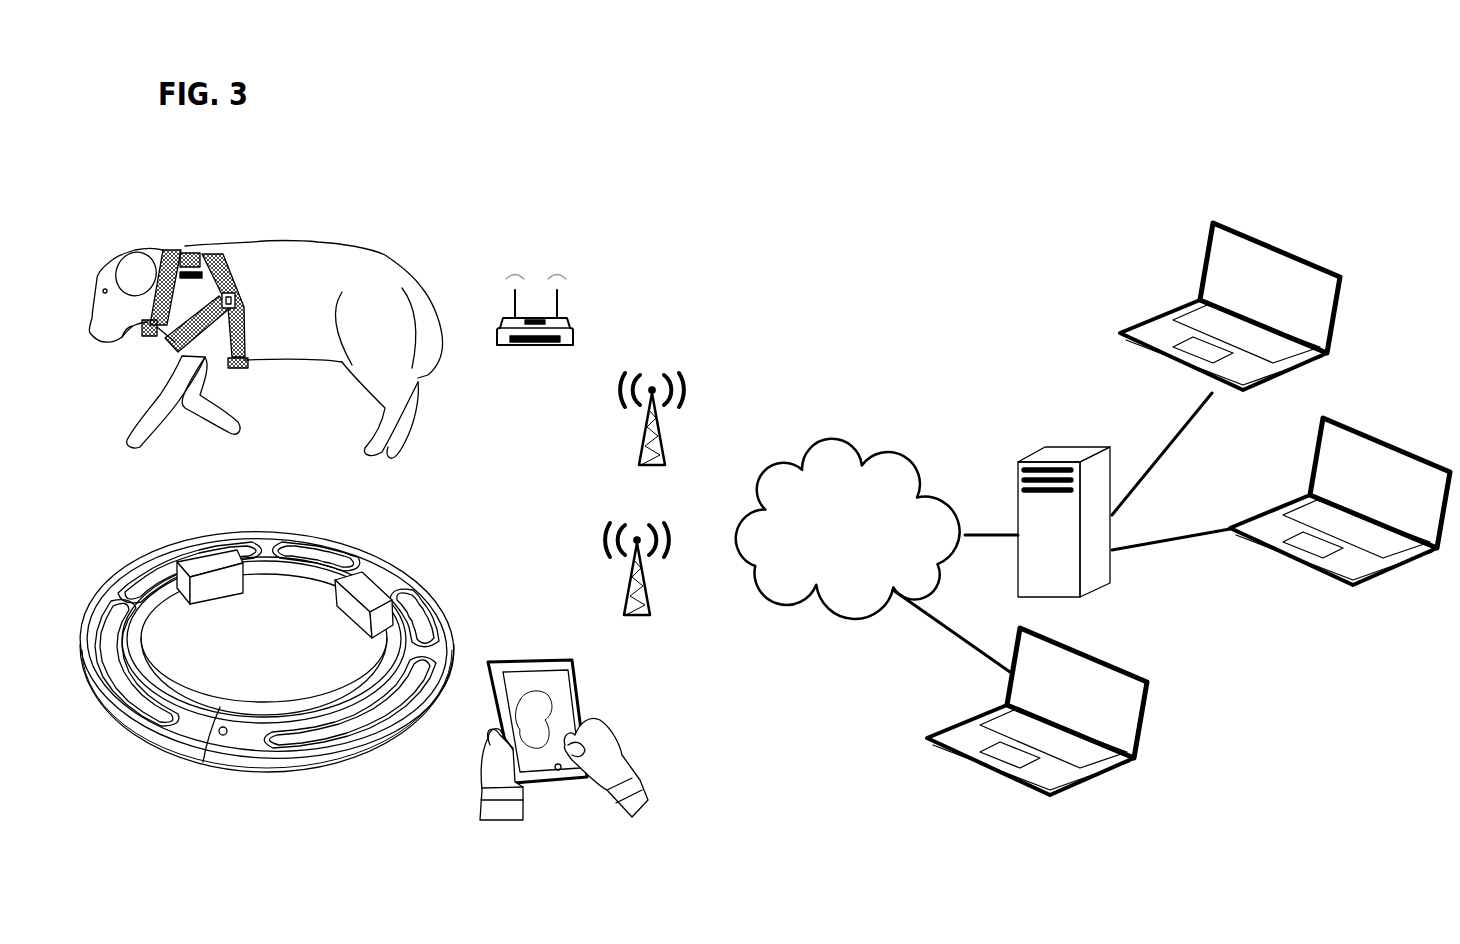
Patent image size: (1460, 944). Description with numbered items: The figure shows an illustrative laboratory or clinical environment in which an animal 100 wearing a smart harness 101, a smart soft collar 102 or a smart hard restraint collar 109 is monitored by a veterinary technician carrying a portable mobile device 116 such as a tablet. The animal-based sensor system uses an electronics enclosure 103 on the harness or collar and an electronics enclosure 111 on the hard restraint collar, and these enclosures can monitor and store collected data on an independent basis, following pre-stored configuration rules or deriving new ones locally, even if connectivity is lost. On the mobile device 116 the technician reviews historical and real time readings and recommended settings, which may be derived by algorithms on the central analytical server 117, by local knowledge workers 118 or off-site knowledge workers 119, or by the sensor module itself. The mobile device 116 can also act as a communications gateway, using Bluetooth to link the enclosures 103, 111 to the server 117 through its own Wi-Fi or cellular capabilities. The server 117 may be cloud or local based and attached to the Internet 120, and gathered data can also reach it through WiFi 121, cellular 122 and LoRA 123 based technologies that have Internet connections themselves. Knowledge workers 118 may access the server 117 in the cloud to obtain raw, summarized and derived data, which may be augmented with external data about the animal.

The animal 100 is at (285, 237).
The smart harness 101 is at (230, 272).
The smart soft collar 102 is at (163, 250).
The electronics enclosure 103 is at (198, 252).
The smart hard restraint collar 109 is at (203, 760).
The electronics enclosure 111 is at (337, 617).
The veterinary technician mobile device 116 is at (553, 650).
The central analytical server 117 is at (1068, 442).
The local knowledge workers 118 is at (1283, 240).
The off-site knowledge workers 119 is at (1145, 660).
The Internet 120 is at (853, 443).
The WiFi 121 is at (560, 263).
The cellular 122 is at (693, 400).
The LoRA 123 is at (683, 530).